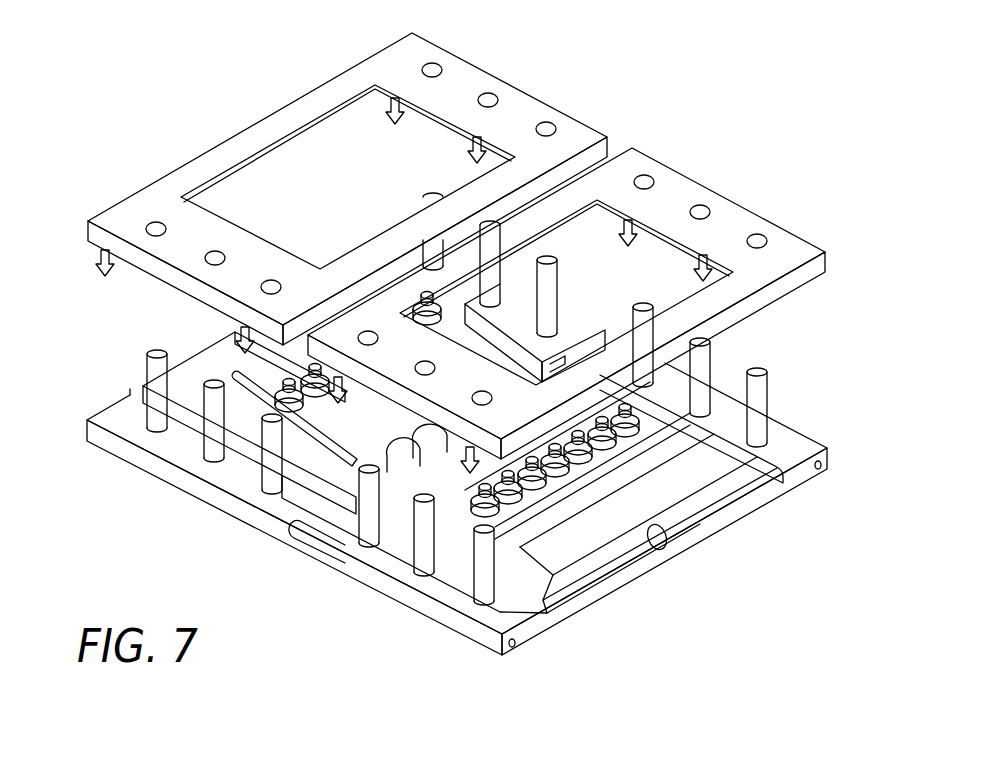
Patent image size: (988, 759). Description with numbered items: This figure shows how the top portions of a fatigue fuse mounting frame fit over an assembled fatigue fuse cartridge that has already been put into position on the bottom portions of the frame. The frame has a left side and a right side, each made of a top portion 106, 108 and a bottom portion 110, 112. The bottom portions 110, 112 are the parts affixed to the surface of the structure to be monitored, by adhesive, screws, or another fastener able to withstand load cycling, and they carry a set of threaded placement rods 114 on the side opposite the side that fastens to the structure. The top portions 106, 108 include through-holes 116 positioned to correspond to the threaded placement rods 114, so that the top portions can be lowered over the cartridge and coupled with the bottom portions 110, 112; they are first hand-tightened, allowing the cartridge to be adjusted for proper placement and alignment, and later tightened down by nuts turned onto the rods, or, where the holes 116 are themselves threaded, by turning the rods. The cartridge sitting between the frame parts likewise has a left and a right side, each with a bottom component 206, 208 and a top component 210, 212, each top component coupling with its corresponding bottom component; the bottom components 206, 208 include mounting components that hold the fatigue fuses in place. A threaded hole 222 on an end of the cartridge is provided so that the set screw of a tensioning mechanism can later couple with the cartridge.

The top portion 106 is at (262, 120).
The top portion 108 is at (805, 277).
The bottom portion 110 is at (432, 519).
The bottom portion 112 is at (530, 632).
The threaded placement rods 114 is at (272, 492).
The through-holes 116 is at (546, 122).
The bottom component 206 is at (196, 348).
The bottom component 208 is at (603, 577).
The top component 210 is at (245, 377).
The top component 212 is at (657, 453).
The threaded hole 222 is at (665, 543).